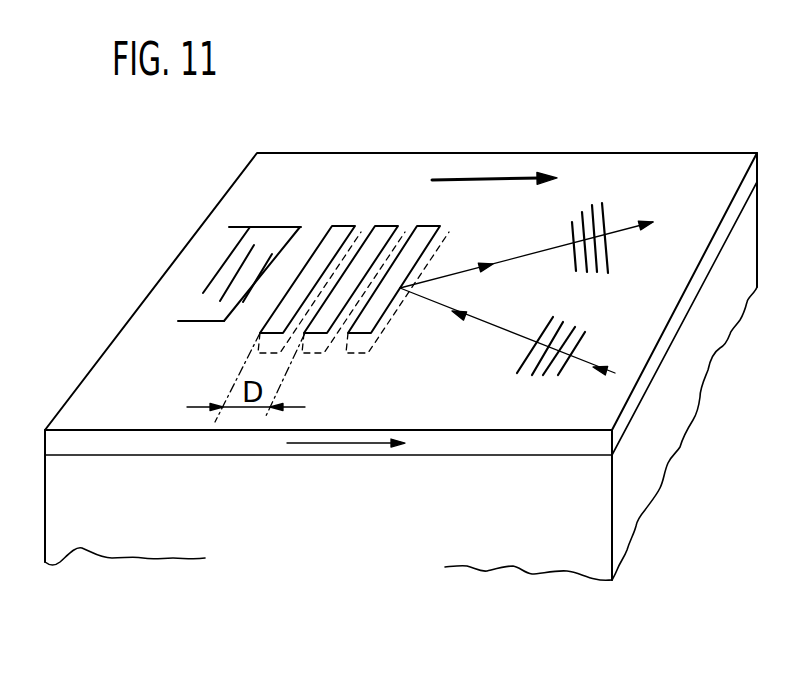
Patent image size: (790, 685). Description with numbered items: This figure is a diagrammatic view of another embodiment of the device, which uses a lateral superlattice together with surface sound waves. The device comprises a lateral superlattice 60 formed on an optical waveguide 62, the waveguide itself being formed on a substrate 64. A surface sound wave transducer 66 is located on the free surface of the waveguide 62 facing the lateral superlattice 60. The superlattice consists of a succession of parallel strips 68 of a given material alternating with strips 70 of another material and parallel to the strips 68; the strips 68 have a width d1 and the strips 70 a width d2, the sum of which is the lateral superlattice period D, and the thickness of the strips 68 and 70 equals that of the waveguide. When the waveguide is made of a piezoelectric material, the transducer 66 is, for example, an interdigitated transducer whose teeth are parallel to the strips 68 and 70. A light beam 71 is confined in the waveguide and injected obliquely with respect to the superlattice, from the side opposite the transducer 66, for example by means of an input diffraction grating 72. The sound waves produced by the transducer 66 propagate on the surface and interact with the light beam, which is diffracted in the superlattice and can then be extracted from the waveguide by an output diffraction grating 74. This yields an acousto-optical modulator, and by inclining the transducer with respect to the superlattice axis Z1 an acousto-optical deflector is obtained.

The lateral superlattice 60 is at (353, 249).
The optical waveguide 62 is at (82, 442).
The substrate 64 is at (70, 520).
The surface sound wave transducer 66 is at (234, 248).
The strips 68 is at (368, 253).
The strips 70 is at (288, 352).
The light beam 71 is at (613, 373).
The input diffraction grating 72 is at (532, 375).
The output diffraction grating 74 is at (603, 203).
The superlattice axis Z1 is at (472, 178).